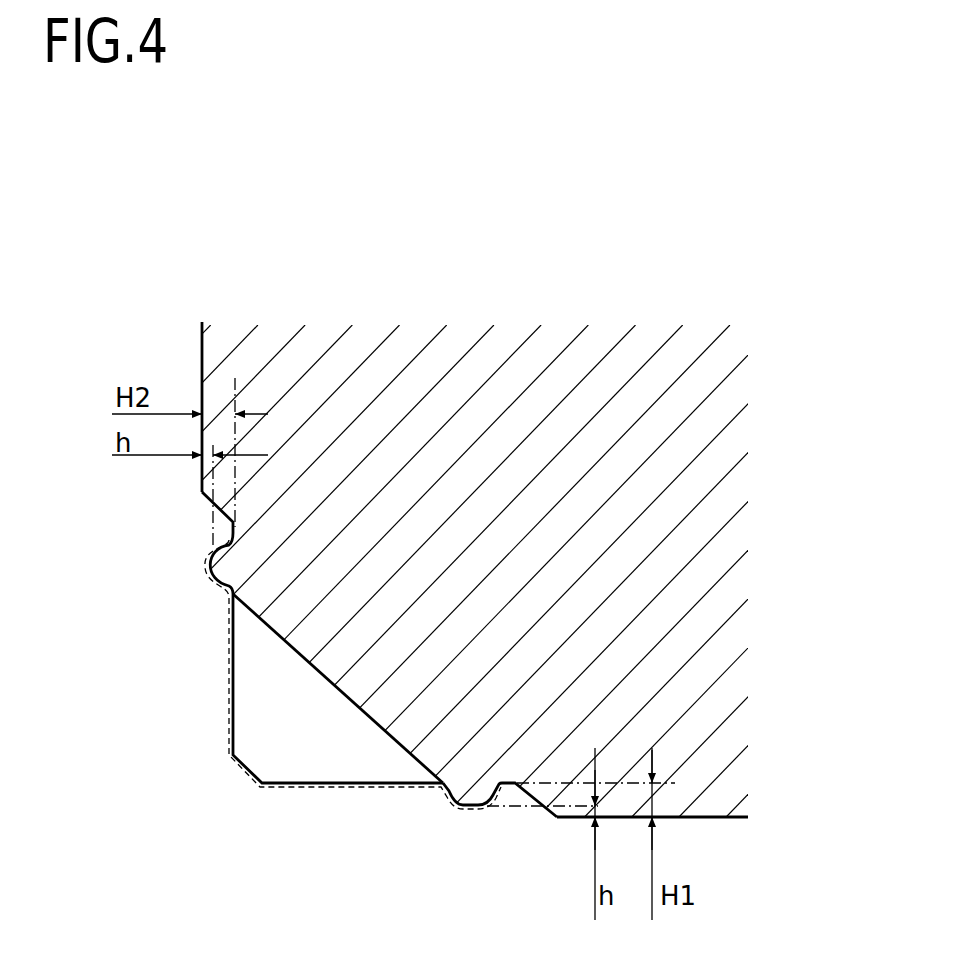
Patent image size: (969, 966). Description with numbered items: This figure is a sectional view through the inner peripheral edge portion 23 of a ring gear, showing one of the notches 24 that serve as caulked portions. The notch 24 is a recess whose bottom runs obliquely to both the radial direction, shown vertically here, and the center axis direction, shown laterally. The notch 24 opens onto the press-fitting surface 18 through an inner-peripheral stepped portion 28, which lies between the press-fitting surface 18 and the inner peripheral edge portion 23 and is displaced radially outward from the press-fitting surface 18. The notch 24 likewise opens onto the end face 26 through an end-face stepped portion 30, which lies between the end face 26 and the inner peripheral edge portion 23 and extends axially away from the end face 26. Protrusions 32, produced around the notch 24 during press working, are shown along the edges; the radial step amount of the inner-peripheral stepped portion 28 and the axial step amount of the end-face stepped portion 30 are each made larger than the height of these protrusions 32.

The end face 26 is at (202, 360).
The end-face stepped portion 30 is at (208, 498).
The protrusion 32 is at (212, 578).
The notch 24 is at (318, 672).
The inner peripheral edge portion 23 is at (376, 788).
The inner-peripheral stepped portion 28 is at (532, 793).
The press-fitting surface 18 is at (703, 818).